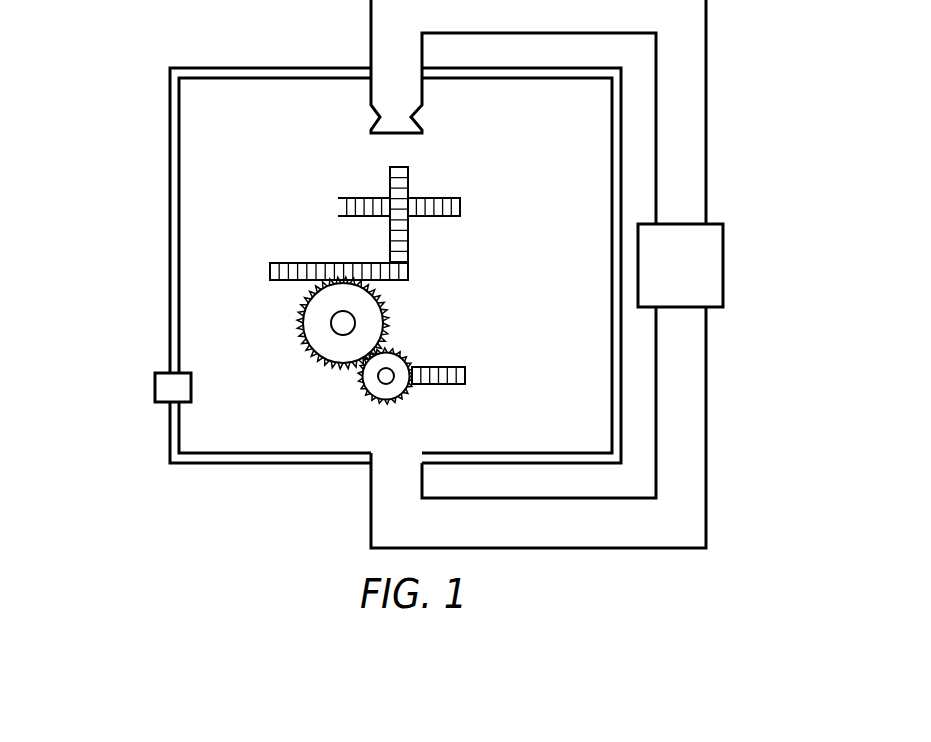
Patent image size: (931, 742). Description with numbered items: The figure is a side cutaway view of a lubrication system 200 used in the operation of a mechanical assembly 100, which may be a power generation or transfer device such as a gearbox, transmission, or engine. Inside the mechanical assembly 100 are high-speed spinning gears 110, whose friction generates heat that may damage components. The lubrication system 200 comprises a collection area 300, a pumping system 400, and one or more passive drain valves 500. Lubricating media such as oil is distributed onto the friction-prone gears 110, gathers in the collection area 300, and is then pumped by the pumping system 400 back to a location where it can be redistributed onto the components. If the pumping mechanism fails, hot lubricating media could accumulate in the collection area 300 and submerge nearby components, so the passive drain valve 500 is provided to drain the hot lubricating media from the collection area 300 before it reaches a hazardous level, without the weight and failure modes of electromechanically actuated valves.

The mechanical assembly 100 is at (452, 286).
The gears 110 is at (390, 176).
The lubrication system 200 is at (115, 246).
The collection area 300 is at (170, 128).
The pumping system 400 is at (723, 265).
The passive drain valve 500 is at (155, 383).